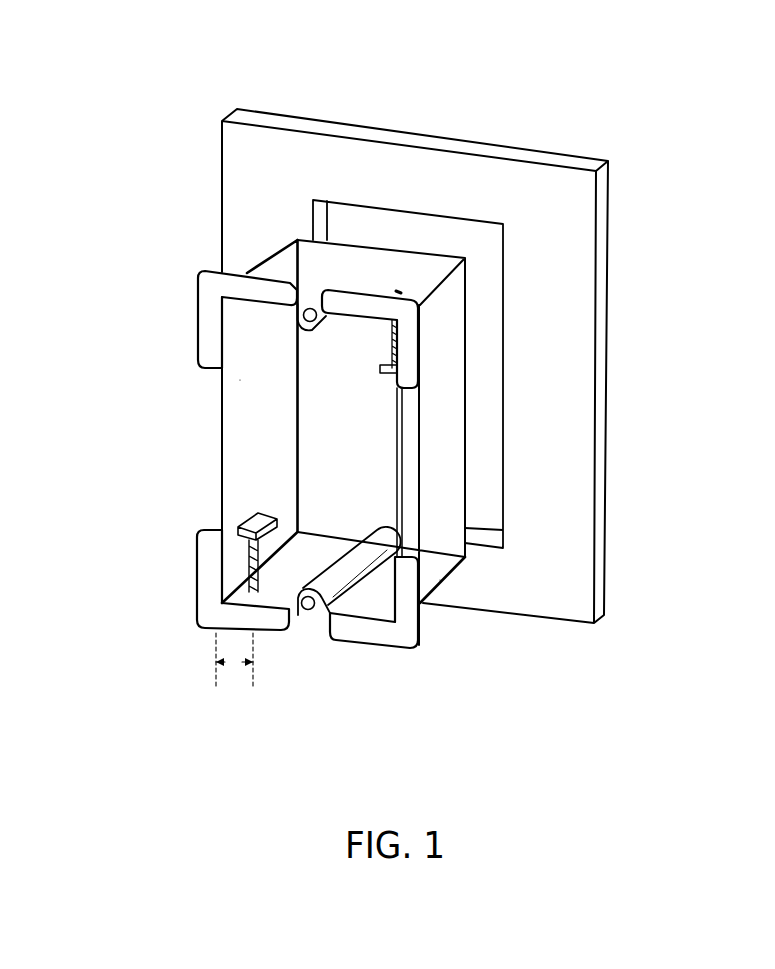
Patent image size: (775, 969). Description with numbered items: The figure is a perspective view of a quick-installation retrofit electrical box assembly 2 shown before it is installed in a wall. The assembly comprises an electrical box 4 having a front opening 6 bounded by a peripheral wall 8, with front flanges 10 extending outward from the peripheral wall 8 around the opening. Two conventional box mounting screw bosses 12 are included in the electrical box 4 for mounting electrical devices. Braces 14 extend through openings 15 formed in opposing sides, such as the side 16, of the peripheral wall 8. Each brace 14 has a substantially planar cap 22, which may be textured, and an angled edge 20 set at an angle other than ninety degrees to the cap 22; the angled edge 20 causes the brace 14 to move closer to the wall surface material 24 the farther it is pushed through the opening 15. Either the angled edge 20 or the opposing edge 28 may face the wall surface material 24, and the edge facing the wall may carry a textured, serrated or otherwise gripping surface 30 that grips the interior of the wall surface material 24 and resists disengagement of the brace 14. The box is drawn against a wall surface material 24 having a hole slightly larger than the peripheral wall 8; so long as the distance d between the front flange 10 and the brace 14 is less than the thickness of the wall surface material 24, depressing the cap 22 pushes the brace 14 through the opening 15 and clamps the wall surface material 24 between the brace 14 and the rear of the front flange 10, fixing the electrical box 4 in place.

The retrofit electrical box assembly 2 is at (482, 292).
The electrical box 4 is at (447, 450).
The front opening 6 is at (220, 412).
The peripheral wall 8 is at (250, 387).
The front flange 10 is at (205, 276).
The box mounting screw bosses 12 is at (308, 308).
The brace 14 is at (378, 347).
The opening 15 is at (418, 302).
The side 16 is at (372, 590).
The angled edge 20 is at (300, 617).
The cap 22 is at (260, 515).
The wall surface material 24 is at (577, 217).
The opposing edge 28 is at (225, 598).
The gripping surface 30 is at (247, 560).